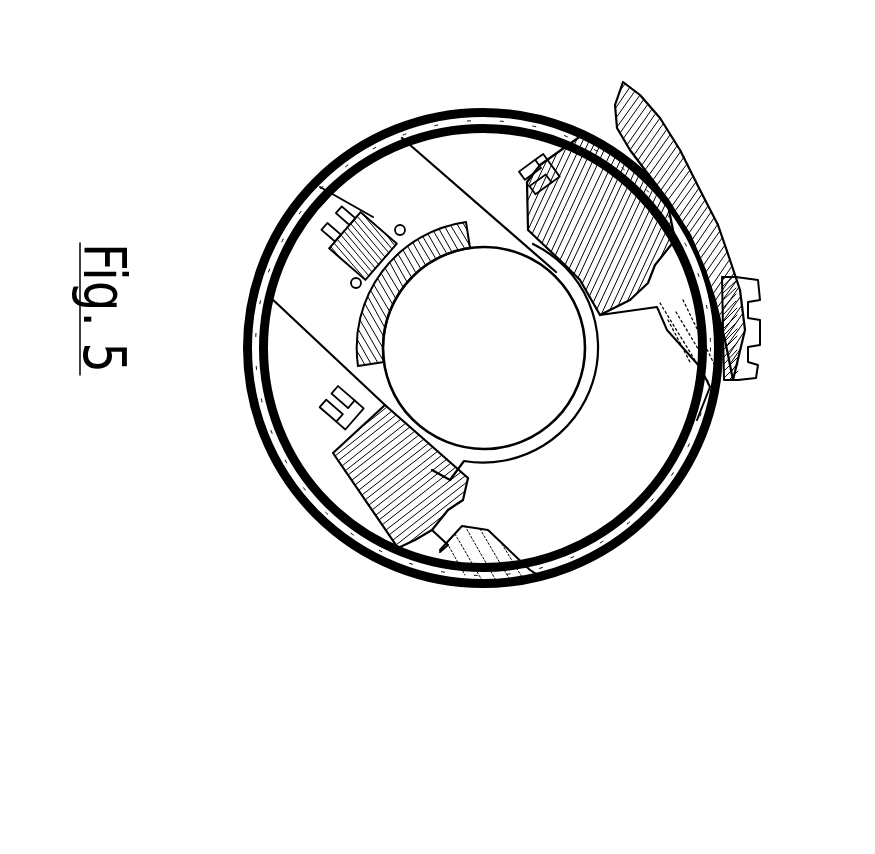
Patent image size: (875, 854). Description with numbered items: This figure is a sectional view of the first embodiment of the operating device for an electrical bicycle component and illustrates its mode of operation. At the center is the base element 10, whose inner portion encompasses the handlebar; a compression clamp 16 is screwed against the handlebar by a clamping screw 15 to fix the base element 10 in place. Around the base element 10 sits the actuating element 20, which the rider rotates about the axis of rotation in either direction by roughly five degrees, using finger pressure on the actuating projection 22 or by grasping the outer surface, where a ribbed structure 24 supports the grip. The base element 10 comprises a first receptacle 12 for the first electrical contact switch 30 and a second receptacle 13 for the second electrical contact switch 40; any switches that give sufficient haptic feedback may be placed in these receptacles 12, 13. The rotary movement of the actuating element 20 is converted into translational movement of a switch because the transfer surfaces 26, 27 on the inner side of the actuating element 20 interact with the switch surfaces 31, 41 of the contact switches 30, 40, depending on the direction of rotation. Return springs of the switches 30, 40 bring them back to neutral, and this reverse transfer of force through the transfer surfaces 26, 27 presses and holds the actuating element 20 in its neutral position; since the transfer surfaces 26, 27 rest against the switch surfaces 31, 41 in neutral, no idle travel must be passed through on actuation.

The base element 10 is at (290, 387).
The first receptacle 12 is at (330, 460).
The second receptacle 13 is at (543, 170).
The clamping screw 15 is at (350, 228).
The compression clamp 16 is at (387, 215).
The actuating element 20 is at (622, 537).
The actuating projection 22 is at (705, 203).
The ribbed structure 24 is at (760, 320).
The transfer surface 26 is at (683, 320).
The transfer surface 27 is at (483, 547).
The first electrical contact switch 30 is at (373, 497).
The switch surface 31 is at (437, 535).
The second electrical contact switch 40 is at (597, 220).
The switch surface 41 is at (657, 303).